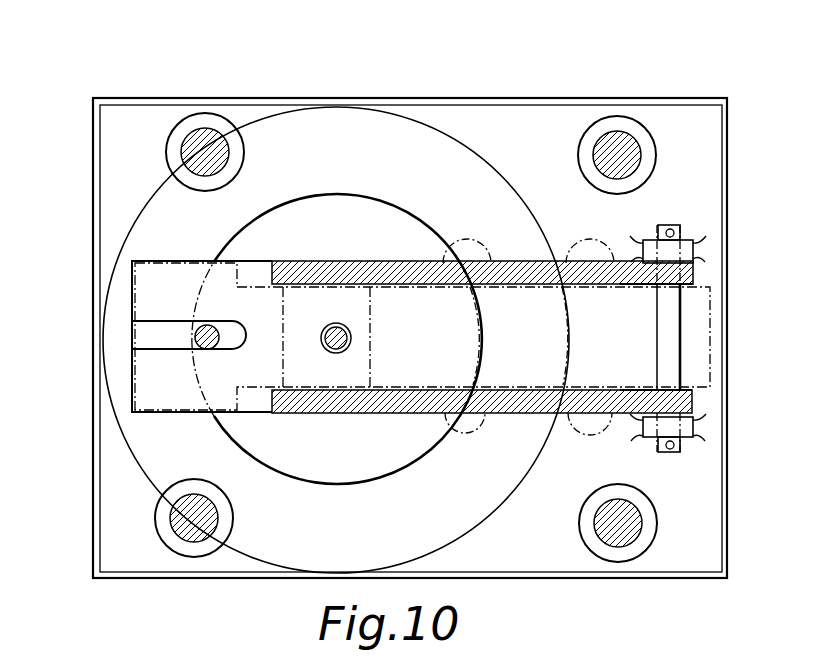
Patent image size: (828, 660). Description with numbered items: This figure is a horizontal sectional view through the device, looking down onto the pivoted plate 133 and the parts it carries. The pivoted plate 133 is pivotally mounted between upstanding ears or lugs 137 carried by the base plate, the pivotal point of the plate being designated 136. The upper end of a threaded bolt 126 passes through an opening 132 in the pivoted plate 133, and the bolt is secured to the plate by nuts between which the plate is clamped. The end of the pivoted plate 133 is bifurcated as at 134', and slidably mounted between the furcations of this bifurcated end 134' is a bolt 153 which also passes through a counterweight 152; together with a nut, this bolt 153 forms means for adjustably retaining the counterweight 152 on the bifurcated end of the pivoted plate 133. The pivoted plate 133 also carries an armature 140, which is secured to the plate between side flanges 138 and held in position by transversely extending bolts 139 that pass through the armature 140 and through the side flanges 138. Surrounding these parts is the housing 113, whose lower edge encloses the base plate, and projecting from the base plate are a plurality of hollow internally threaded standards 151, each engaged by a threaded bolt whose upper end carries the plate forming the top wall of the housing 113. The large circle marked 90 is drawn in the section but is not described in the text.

The housing 113 is at (97, 178).
The hollow internally threaded standards 151 is at (182, 168).
The circular turntable 90 is at (337, 339).
The counterweight 152 is at (143, 292).
The bifurcated end 134' is at (189, 317).
The bolt 153 is at (200, 346).
The pivoted plate 133 is at (172, 261).
The side flanges 138 is at (527, 263).
The opening 132 is at (330, 330).
The threaded bolt 126 is at (343, 330).
The transversely extending bolts 139 is at (592, 240).
The armature 140 is at (700, 333).
The upstanding ears or lugs 137 is at (695, 255).
The pivotal point 136 is at (681, 447).